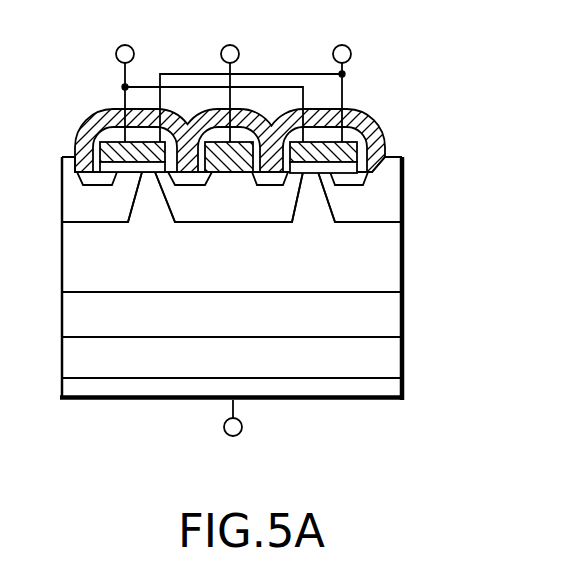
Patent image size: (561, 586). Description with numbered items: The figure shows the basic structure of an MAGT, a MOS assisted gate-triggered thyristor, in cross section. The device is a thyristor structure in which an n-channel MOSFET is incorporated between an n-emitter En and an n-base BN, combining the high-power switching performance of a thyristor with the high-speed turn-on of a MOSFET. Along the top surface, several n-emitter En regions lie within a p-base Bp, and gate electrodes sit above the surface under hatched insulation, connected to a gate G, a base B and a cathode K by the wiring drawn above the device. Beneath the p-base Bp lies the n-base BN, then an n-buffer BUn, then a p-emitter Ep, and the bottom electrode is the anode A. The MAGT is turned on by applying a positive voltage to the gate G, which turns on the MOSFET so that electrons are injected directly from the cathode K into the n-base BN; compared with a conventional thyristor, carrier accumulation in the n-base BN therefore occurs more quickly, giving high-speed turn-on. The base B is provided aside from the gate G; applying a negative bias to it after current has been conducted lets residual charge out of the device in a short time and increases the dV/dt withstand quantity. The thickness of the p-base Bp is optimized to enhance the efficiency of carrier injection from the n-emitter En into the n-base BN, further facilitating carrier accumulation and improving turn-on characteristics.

The gate G is at (201, 92).
The base B is at (229, 92).
The cathode K is at (258, 93).
The anode A is at (232, 433).
The p-base Bp is at (232, 197).
The n-emitter En is at (275, 181).
The n-base BN is at (390, 253).
The n-buffer BUn is at (388, 313).
The p-emitter Ep is at (390, 360).